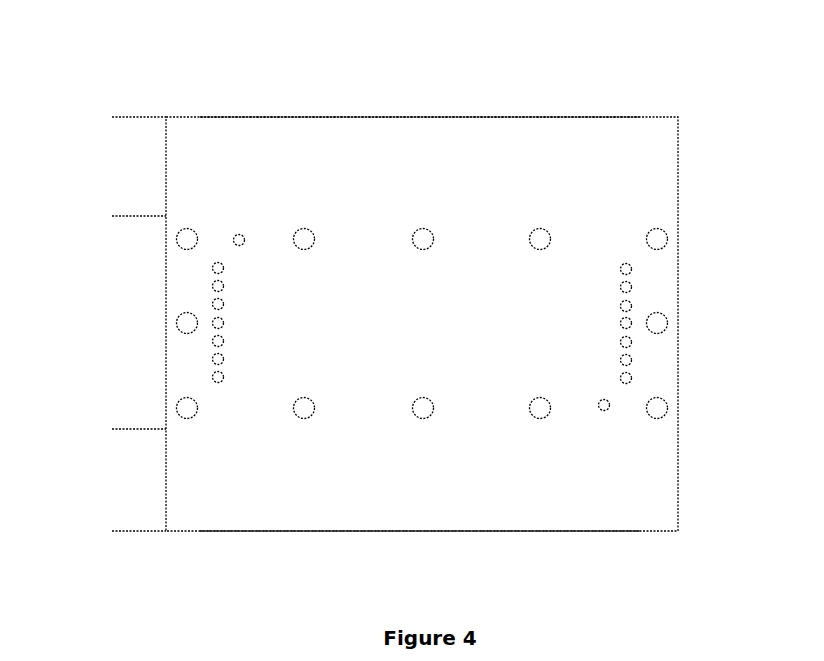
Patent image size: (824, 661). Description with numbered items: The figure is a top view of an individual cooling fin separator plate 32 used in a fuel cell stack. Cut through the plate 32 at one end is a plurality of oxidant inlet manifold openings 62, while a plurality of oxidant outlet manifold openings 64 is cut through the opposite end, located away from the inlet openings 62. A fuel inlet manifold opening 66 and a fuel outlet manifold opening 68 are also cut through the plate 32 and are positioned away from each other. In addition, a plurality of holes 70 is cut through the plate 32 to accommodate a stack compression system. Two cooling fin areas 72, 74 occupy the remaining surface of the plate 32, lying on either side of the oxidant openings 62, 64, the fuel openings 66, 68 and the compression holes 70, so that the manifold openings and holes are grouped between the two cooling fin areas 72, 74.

The cooling fin separator plate 32 is at (718, 77).
The oxidant inlet manifold openings 62 is at (217, 375).
The oxidant outlet manifold openings 64 is at (628, 377).
The fuel inlet manifold opening 66 is at (239, 239).
The fuel outlet manifold opening 68 is at (608, 408).
The holes 70 is at (662, 238).
The cooling fin area 72 is at (448, 163).
The cooling fin area 74 is at (537, 492).